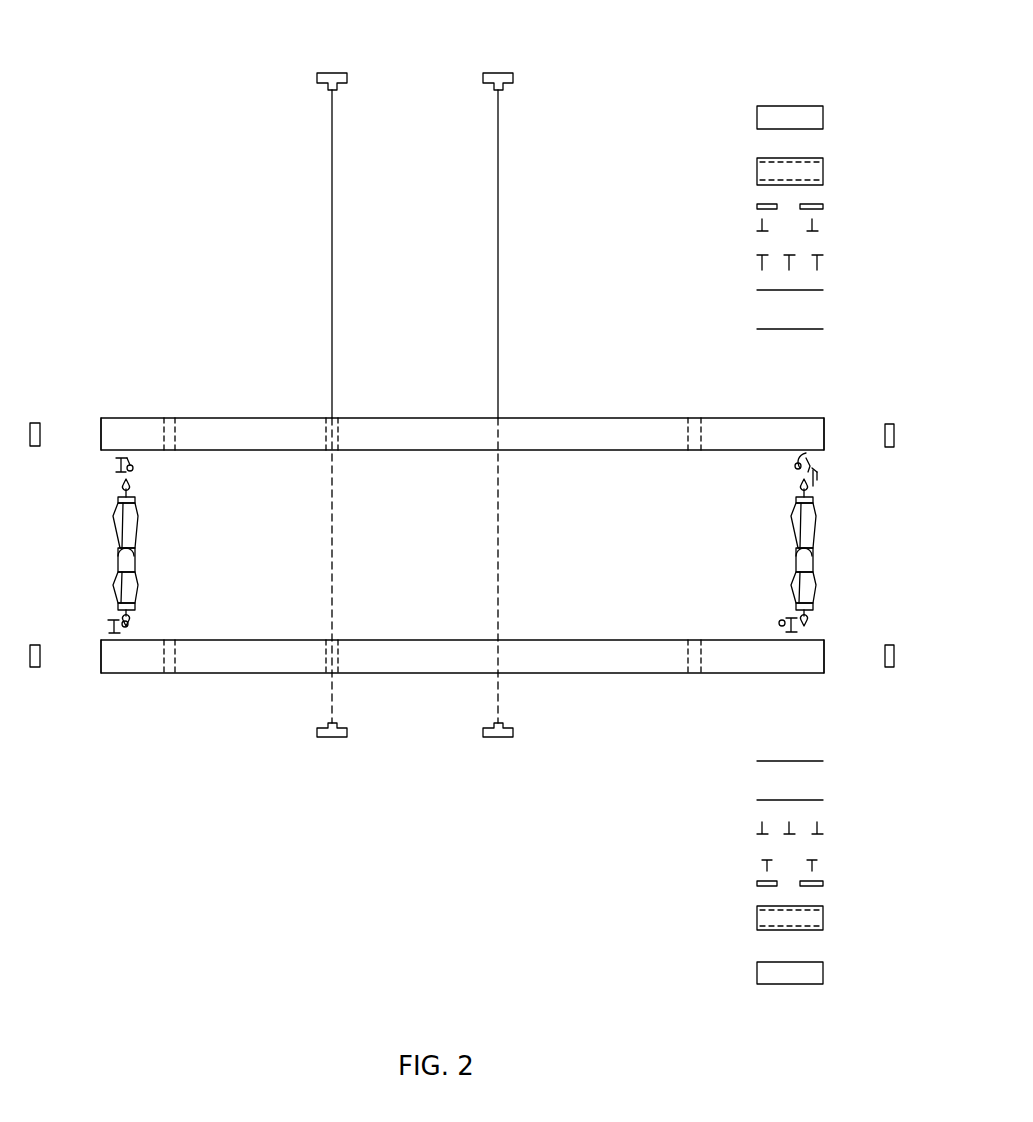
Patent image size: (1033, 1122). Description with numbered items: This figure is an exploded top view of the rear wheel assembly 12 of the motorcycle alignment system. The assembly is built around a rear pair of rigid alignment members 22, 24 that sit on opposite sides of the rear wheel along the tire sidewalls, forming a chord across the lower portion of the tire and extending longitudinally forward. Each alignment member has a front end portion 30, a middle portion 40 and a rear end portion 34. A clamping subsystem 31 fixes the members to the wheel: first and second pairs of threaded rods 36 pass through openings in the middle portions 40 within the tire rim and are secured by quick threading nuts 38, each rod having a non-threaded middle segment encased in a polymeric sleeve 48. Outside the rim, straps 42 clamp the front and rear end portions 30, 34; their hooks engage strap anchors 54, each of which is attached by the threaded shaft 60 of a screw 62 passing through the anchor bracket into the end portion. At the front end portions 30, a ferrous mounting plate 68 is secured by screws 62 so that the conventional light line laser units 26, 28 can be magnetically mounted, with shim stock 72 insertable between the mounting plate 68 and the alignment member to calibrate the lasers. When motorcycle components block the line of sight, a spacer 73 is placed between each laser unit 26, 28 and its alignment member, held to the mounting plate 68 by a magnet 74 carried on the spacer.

The rear wheel assembly 12 is at (150, 98).
The alignment member 22 is at (268, 674).
The alignment member 24 is at (276, 418).
The light line laser unit 26 is at (757, 984).
The light line laser unit 28 is at (757, 112).
The front end portion 30 is at (740, 418).
The clamping subsystem 31 is at (302, 512).
The rear end portion 34 is at (226, 418).
The threaded rod 36 is at (494, 215).
The quick threading nut 38 is at (482, 78).
The middle portion 40 is at (420, 452).
The strap 42 is at (92, 555).
The polymeric sleeve 48 is at (500, 190).
The strap anchor 54 is at (135, 465).
The threaded shaft 60 is at (824, 257).
The screw 62 is at (757, 262).
The mounting plate 68 is at (816, 290).
The shim stock 72 is at (816, 329).
The spacer 73 is at (822, 158).
The magnet 74 is at (824, 206).